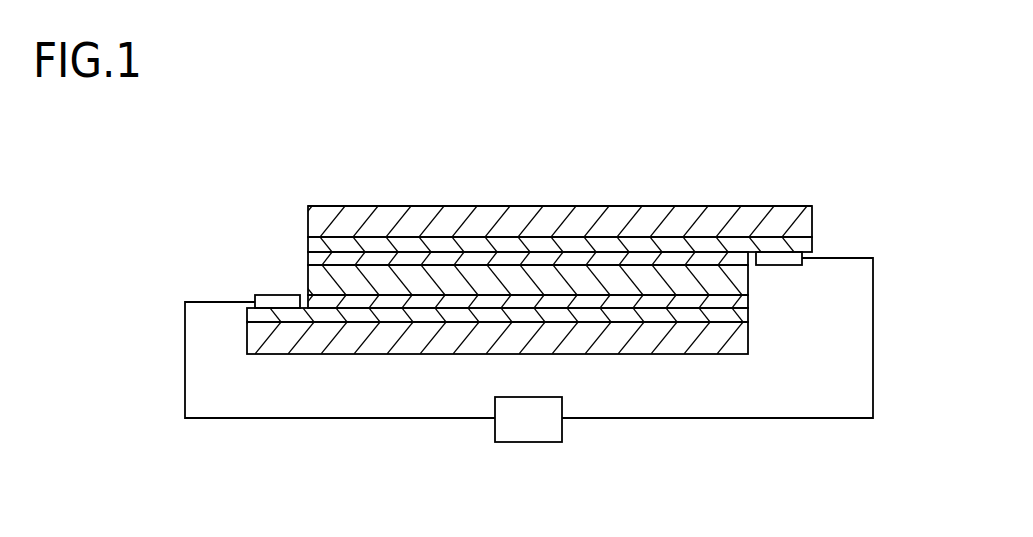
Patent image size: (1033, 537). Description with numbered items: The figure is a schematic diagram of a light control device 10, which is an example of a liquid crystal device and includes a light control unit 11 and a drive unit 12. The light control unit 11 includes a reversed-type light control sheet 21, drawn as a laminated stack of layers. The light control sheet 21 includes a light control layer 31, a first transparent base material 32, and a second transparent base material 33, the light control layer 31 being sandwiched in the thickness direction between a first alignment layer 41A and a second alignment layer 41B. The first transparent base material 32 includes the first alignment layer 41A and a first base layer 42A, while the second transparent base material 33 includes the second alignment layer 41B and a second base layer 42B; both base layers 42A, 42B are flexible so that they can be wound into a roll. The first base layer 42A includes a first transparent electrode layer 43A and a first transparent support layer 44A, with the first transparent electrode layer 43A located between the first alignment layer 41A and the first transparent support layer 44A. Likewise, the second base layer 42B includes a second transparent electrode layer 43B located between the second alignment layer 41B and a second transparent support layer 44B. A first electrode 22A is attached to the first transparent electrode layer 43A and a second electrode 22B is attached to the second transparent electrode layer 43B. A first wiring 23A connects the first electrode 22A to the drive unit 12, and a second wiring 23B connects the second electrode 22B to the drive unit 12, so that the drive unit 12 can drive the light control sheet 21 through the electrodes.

The light control device 10 is at (507, 273).
The light control unit 11 is at (496, 282).
The drive unit 12 is at (565, 428).
The light control sheet 21 is at (358, 200).
The first electrode 22A is at (278, 293).
The second electrode 22B is at (788, 265).
The first wiring 23A is at (342, 418).
The second wiring 23B is at (740, 418).
The light control layer 31 is at (748, 282).
The first transparent base material 32 is at (493, 346).
The second transparent base material 33 is at (566, 215).
The first alignment layer 41A is at (355, 300).
The second alignment layer 41B is at (685, 257).
The first base layer 42A is at (469, 353).
The second base layer 42B is at (591, 209).
The first transparent electrode layer 43A is at (462, 315).
The second transparent electrode layer 43B is at (625, 243).
The first transparent support layer 44A is at (532, 354).
The second transparent support layer 44B is at (517, 206).